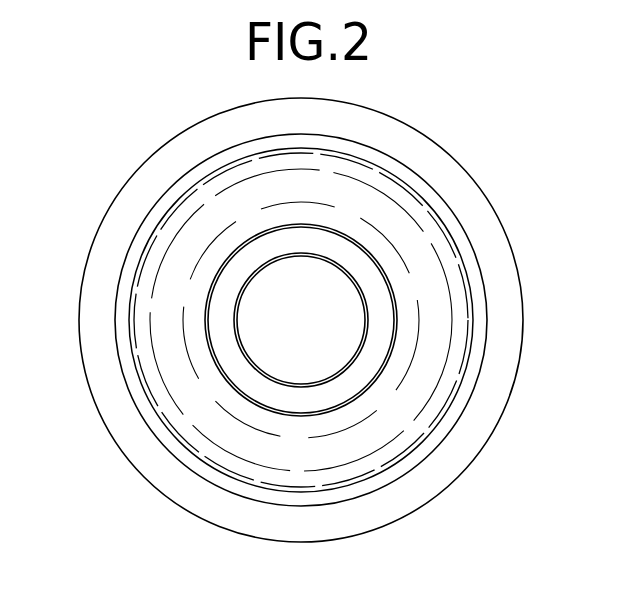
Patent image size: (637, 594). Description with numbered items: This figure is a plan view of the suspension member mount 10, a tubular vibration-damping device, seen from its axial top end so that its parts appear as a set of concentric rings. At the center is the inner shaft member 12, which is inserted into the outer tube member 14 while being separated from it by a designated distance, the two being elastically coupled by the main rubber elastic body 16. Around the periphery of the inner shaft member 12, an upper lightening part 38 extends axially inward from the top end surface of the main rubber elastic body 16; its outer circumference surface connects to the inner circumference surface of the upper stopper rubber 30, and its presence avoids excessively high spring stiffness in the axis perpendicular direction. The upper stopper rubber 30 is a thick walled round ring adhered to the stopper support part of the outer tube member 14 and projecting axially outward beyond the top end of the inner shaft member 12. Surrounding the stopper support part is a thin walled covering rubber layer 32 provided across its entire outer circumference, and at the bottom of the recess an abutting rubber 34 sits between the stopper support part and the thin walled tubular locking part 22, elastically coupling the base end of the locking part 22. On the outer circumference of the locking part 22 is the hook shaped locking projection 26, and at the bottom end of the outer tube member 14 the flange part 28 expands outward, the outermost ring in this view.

The suspension member mount 10 is at (520, 118).
The inner shaft member 12 is at (318, 222).
The outer tube member 14 is at (105, 212).
The main rubber elastic body 16 is at (410, 310).
The locking part 22 is at (202, 157).
The locking projection 26 is at (192, 467).
The flange part 28 is at (455, 460).
The upper stopper rubber 30 is at (177, 387).
The covering rubber layer 32 is at (328, 482).
The abutting rubber 34 is at (130, 302).
The upper lightening part 38 is at (405, 383).